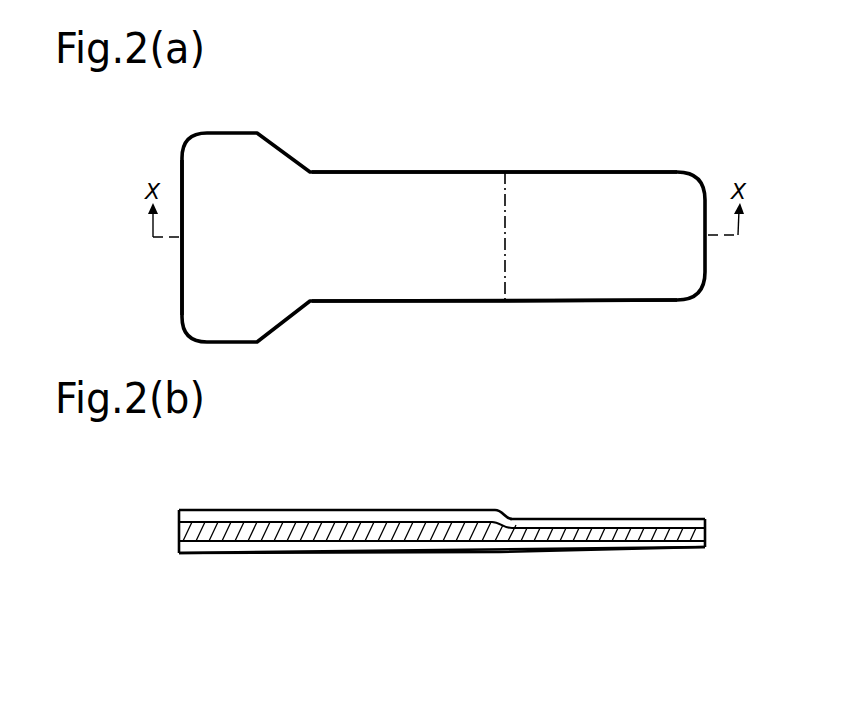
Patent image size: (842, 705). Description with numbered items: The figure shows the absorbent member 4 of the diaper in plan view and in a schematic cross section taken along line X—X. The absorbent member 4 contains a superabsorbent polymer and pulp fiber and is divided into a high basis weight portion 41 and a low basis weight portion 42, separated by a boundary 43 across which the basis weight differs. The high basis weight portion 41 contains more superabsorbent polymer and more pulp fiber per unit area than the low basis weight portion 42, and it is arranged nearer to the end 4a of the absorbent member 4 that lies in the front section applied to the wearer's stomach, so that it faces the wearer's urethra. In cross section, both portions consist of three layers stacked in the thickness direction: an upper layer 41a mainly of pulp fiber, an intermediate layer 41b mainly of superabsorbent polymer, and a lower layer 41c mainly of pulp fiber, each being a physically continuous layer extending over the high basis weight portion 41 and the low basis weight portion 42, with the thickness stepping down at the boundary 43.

In FIG. 2A, the absorbent member 4 is at (627, 145).
In FIG. 2A, the end of the absorbent member 4a is at (181, 284).
In FIG. 2A, the high basis weight portion 41 is at (377, 255).
In FIG. 2B, the high basis weight portion 41 is at (183, 483).
In FIG. 2A, the low basis weight portion 42 is at (625, 253).
In FIG. 2B, the low basis weight portion 42 is at (507, 483).
In FIG. 2A, the boundary 43 is at (504, 211).
In FIG. 2B, the boundary 43 is at (506, 553).
In FIG. 2B, the upper layer 41a is at (257, 512).
In FIG. 2B, the intermediate layer 41b is at (323, 530).
In FIG. 2B, the lower layer 41c is at (389, 545).